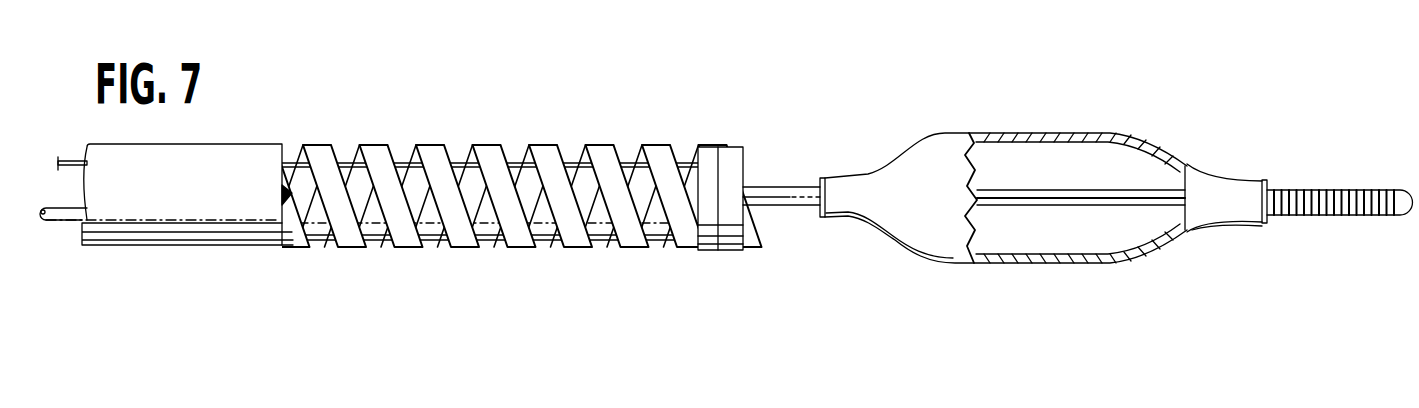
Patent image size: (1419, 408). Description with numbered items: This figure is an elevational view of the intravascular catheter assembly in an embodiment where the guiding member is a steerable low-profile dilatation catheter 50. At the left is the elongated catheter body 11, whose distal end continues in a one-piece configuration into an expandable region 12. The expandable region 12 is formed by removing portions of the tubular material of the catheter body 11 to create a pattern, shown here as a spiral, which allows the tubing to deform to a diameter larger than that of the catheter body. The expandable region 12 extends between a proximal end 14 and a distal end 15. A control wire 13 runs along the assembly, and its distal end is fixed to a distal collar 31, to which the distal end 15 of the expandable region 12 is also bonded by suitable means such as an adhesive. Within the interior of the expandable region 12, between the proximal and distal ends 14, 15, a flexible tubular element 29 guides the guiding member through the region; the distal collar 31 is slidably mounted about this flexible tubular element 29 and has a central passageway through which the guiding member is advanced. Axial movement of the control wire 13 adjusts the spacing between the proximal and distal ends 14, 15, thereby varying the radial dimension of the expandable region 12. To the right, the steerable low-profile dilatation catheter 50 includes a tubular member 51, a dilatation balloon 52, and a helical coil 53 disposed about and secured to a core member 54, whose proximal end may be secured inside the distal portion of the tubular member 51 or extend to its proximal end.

The elongated catheter body 11 is at (153, 213).
The expandable region 12 is at (504, 197).
The control wire 13 is at (477, 150).
The proximal end 14 is at (307, 238).
The distal end 15 is at (697, 240).
The flexible tubular element 29 is at (576, 147).
The distal collar 31 is at (727, 162).
The steerable low-profile dilatation catheter 50 is at (1043, 202).
The tubular member 51 is at (773, 197).
The dilatation balloon 52 is at (1057, 265).
The helical coil 53 is at (1327, 217).
The core member 54 is at (1122, 200).